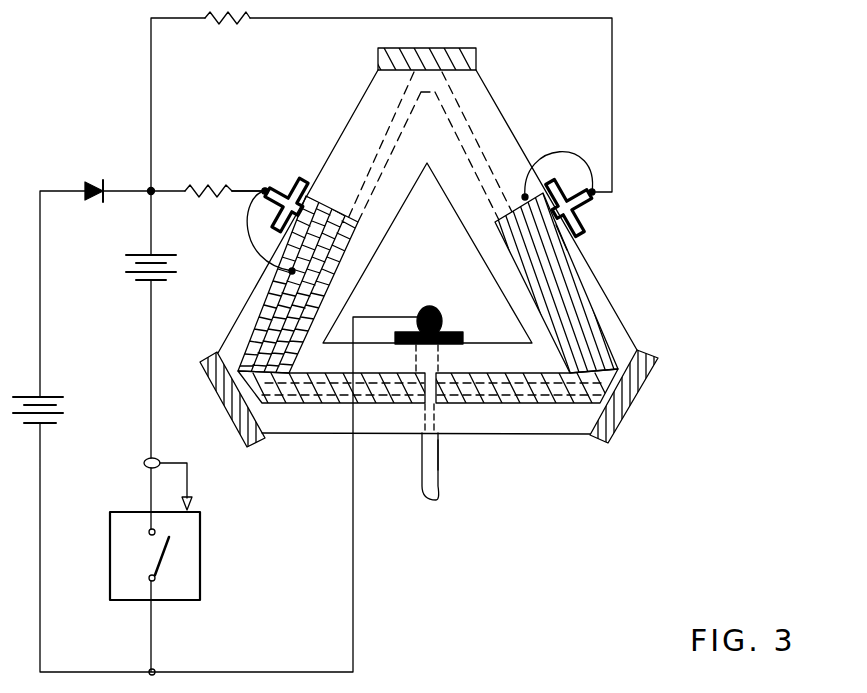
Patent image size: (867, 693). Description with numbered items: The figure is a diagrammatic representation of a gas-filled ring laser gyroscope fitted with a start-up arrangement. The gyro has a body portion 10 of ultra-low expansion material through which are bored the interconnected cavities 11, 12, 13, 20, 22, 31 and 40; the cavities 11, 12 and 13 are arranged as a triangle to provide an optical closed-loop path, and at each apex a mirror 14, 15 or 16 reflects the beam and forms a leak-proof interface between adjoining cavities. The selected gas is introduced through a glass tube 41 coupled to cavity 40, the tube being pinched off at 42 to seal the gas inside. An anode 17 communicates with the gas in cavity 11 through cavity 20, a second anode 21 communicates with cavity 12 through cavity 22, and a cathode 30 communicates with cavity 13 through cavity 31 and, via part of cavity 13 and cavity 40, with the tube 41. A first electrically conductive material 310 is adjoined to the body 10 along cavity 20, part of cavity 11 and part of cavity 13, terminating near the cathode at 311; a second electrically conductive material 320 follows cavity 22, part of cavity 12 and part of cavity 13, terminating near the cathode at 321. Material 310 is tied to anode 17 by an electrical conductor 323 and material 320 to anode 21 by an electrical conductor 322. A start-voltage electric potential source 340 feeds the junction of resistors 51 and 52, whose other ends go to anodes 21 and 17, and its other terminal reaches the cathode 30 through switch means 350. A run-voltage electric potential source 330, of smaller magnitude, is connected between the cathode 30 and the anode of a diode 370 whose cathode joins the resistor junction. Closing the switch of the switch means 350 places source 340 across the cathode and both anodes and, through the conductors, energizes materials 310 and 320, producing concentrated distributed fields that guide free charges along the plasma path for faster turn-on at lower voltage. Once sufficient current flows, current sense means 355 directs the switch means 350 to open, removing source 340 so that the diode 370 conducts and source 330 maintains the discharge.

The body portion 10 is at (494, 95).
The cavity 11 is at (392, 118).
The cavity 12 is at (478, 150).
The cavity 13 is at (334, 378).
The mirror 14 is at (477, 57).
The mirror 15 is at (640, 392).
The mirror 16 is at (218, 397).
The anode 17 is at (278, 190).
The cavity 20 is at (322, 195).
The second anode 21 is at (588, 199).
The cavity 22 is at (567, 250).
The cathode 30 is at (430, 306).
The cavity 31 is at (441, 363).
The cavity 40 is at (424, 418).
The glass tube 41 is at (446, 457).
The pinch-off 42 is at (438, 491).
The resistor 51 is at (218, 26).
The resistor 52 is at (225, 200).
The first electrically conductive material 310 is at (270, 296).
The termination of electrically conductive material 310 311 is at (423, 405).
The second electrically conductive material 320 is at (587, 296).
The termination of electrically conductive material 320 321 is at (449, 408).
The electrical conductor 322 is at (540, 147).
The electrical conductor 323 is at (250, 246).
The electric potential source 330 is at (50, 395).
The electric potential source 340 is at (133, 277).
The switch means 350 is at (202, 548).
The current sense means 355 is at (152, 190).
The diode 370 is at (100, 182).